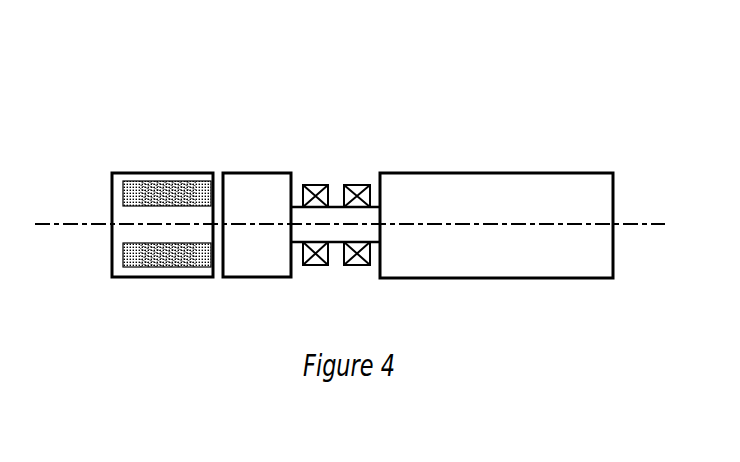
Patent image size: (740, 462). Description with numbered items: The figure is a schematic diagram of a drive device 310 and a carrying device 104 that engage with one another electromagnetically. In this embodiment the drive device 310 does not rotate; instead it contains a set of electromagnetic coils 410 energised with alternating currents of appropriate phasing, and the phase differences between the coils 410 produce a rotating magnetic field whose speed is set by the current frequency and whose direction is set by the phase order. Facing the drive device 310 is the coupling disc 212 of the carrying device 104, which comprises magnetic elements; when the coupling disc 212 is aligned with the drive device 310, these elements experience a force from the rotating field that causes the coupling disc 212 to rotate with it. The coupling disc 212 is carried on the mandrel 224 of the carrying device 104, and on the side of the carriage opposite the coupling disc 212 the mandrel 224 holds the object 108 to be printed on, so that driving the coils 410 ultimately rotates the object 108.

The drive device 310 is at (147, 151).
The electromagnetic coils 410 is at (160, 268).
The coupling disc 212 is at (263, 178).
The carrying device 104 is at (343, 166).
The mandrel 224 is at (336, 233).
The object to be printed on 108 is at (506, 178).